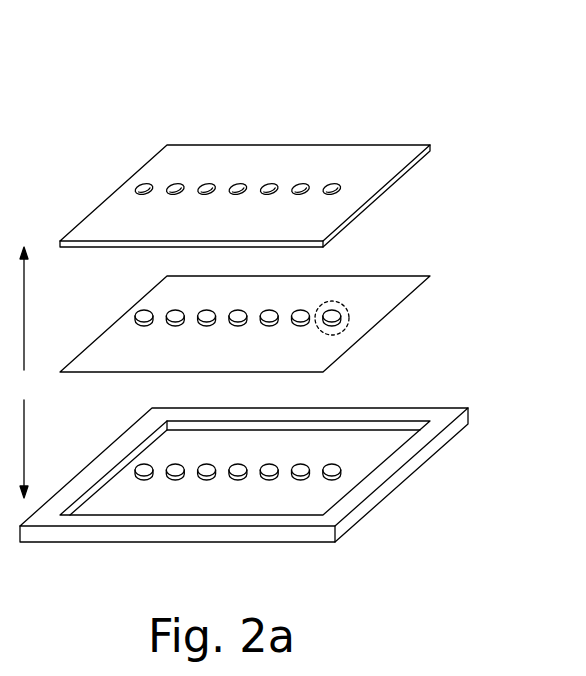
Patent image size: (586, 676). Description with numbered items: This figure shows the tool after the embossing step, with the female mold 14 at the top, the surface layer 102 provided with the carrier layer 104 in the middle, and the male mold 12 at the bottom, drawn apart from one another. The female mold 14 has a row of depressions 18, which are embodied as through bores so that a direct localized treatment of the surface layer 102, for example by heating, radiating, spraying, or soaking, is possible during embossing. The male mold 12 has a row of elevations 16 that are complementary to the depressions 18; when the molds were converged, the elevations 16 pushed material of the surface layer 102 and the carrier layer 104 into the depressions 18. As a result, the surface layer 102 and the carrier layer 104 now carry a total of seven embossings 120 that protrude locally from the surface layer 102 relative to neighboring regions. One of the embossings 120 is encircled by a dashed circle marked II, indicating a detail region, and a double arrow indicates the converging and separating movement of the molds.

The male mold 12 is at (253, 484).
The female mold 14 is at (253, 155).
The elevations 16 is at (338, 469).
The depressions 18 is at (145, 186).
The surface layer 102 is at (286, 282).
The carrier layer 104 is at (286, 282).
The embossings 120 is at (270, 320).
The detail region II is at (352, 315).